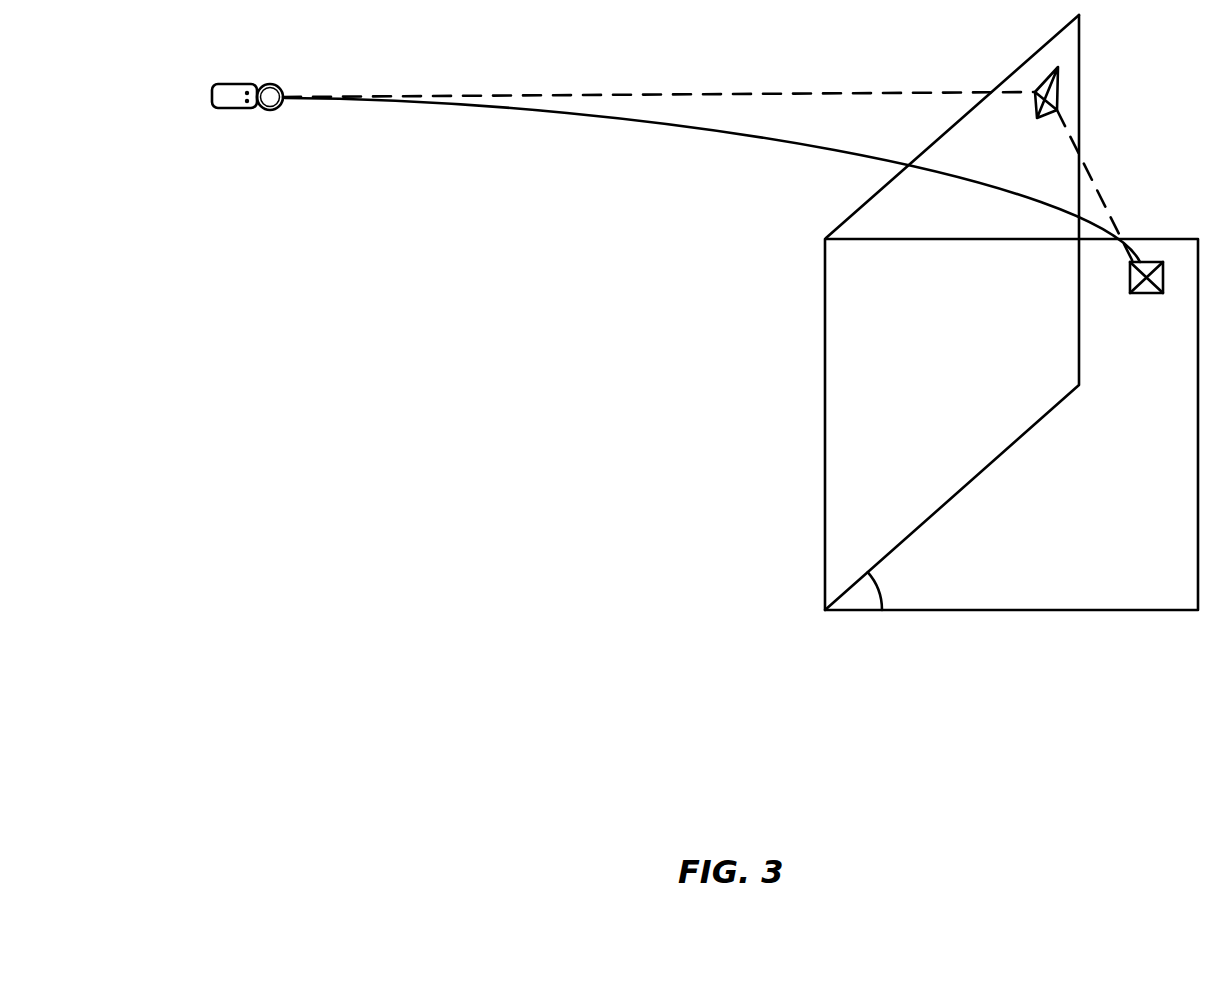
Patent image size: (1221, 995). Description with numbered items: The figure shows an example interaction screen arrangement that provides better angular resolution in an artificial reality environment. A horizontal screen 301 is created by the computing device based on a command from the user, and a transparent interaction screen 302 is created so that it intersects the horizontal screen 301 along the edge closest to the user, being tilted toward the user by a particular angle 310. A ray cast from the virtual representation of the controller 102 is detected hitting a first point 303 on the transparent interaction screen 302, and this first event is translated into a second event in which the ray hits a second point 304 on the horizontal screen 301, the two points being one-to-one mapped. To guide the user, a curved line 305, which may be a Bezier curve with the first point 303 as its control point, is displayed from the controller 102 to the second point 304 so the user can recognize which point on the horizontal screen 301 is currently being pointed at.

The controller 102 is at (212, 97).
The horizontal screen 301 is at (980, 612).
The transparent interaction screen 302 is at (985, 468).
The first point 303 is at (1035, 93).
The second point 304 is at (1138, 294).
The curved line 305 is at (738, 135).
The angle 310 is at (885, 585).